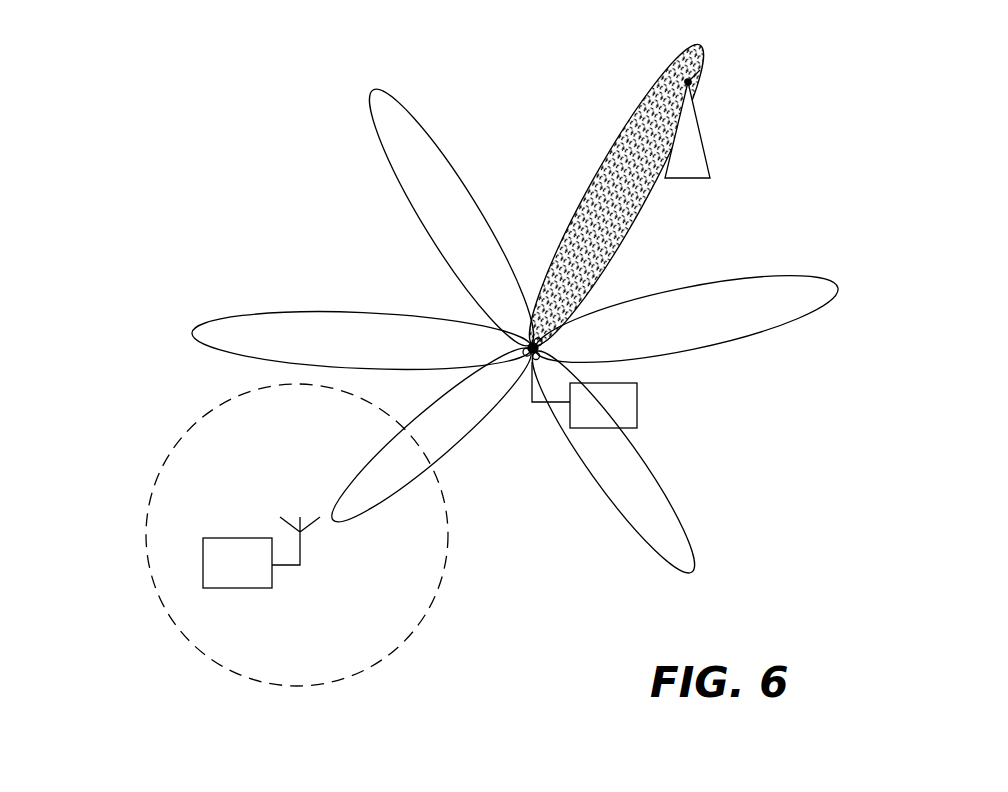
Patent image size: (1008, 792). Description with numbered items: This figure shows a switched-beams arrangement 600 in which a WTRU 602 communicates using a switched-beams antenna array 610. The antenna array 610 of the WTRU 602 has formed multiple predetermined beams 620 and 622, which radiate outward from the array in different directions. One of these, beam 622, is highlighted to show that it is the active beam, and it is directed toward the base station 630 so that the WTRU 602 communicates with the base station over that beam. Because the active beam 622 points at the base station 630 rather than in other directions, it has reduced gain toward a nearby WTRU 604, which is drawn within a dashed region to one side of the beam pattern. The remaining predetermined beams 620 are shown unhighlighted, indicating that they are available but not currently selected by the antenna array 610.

The wireless communication system 600 is at (302, 48).
The WTRU 602 is at (637, 392).
The nearby WTRU 604 is at (203, 573).
The antenna array 610 is at (540, 345).
The predetermined beams 620 is at (532, 308).
The active beam 622 is at (638, 98).
The base station 630 is at (707, 155).